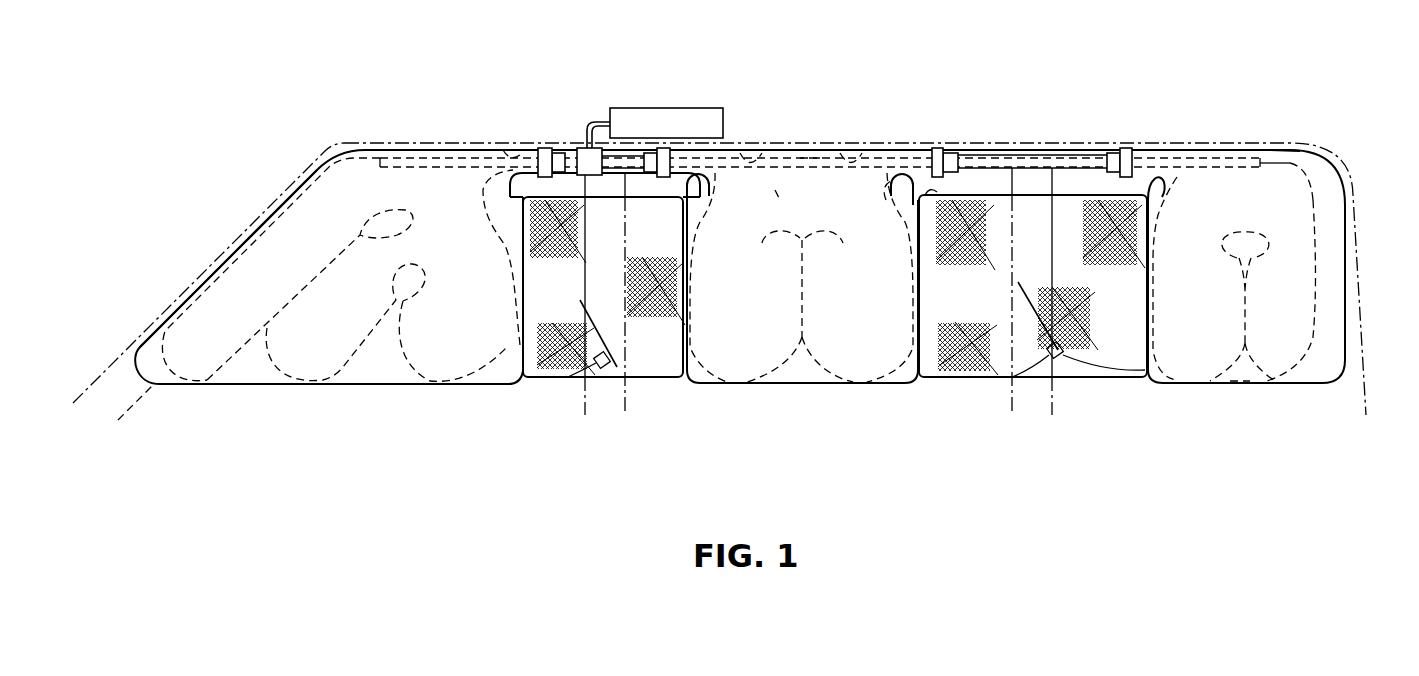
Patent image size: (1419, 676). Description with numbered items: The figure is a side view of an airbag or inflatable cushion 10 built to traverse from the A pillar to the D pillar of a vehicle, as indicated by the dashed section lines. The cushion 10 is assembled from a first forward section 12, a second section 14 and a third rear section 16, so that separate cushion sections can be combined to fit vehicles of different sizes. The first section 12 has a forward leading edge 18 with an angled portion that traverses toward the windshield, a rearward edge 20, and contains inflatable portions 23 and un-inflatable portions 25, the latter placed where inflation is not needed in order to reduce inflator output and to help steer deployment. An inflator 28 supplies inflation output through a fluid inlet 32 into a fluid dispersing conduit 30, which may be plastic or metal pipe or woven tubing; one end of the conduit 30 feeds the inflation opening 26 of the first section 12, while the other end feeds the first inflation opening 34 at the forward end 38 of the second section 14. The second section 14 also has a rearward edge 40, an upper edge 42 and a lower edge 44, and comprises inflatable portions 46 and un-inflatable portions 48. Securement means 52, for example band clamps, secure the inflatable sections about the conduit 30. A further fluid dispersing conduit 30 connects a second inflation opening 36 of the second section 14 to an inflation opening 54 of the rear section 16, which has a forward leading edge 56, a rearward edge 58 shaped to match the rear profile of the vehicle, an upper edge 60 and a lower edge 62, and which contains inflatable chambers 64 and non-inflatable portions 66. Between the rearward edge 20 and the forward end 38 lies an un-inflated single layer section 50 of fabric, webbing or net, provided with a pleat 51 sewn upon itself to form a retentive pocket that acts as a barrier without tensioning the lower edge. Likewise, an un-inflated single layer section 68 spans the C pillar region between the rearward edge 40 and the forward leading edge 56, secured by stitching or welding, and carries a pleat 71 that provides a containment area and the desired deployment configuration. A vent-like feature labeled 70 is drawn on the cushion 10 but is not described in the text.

The inflatable cushion 10 is at (1228, 98).
The first forward section 12 is at (404, 386).
The second section 14 is at (860, 390).
The third rear section 16 is at (1267, 388).
The forward leading edge 18 is at (229, 250).
The rearward edge 20 is at (520, 375).
The inflatable portions 23 is at (395, 190).
The un-inflatable portions 25 is at (262, 372).
The inflation opening 26 is at (510, 158).
The inflator 28 is at (723, 123).
The fluid dispersing conduit 30 is at (568, 153).
The fluid inlet 32 is at (590, 122).
The first inflation opening 34 is at (688, 150).
The second inflation opening 36 is at (960, 152).
The forward end 38 is at (683, 357).
The rearward edge 40 is at (937, 190).
The upper edge 42 is at (810, 157).
The lower edge 44 is at (783, 385).
The inflatable portions 46 is at (777, 187).
The un-inflatable portions 48 is at (893, 186).
The un-inflated single layer section 50 is at (540, 380).
The pleat 51 is at (560, 380).
The securement means 52 is at (543, 148).
The inflation opening 54 is at (1098, 160).
The forward leading edge 56 is at (1148, 380).
The rearward edge 58 is at (1347, 308).
The upper edge 60 is at (1293, 150).
The lower edge 62 is at (1307, 380).
The inflatable portions or chambers 64 is at (1284, 200).
The non-inflatable portions 66 is at (1240, 380).
The un-inflated single layer section 68 is at (1090, 378).
The vent port 70 is at (745, 150).
The pleat 71 is at (1065, 372).